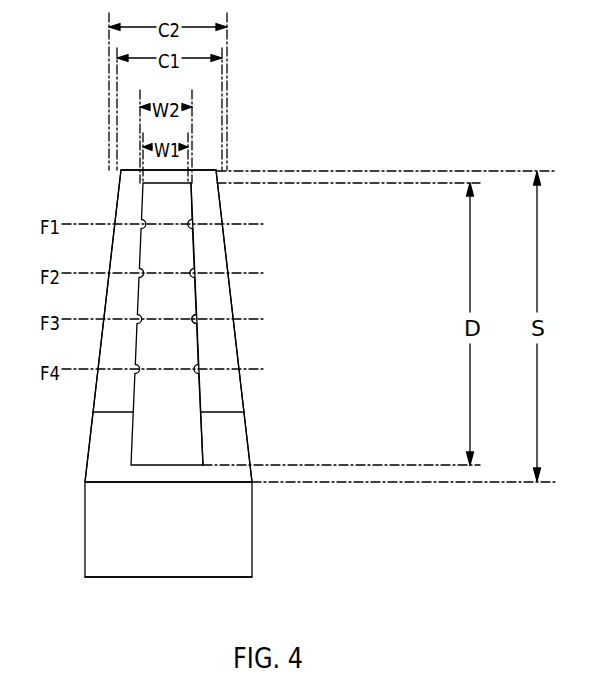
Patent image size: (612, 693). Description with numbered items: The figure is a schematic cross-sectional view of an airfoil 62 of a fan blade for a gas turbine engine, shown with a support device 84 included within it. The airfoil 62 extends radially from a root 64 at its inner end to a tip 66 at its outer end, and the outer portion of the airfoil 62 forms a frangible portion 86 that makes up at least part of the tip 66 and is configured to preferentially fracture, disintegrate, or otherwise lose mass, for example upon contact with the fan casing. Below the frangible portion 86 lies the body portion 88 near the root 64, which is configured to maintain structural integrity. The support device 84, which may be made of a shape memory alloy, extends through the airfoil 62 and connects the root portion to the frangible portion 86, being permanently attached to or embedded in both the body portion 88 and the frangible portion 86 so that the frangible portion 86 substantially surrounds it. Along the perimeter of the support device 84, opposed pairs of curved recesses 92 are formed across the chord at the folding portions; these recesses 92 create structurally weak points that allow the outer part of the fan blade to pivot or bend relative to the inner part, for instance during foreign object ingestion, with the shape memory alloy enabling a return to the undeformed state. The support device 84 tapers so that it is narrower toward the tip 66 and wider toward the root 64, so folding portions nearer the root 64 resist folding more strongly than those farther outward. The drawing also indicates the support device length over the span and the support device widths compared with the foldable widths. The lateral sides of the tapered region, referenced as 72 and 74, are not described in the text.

The airfoil 62 is at (279, 393).
The root 64 is at (183, 577).
The tip 66 is at (125, 168).
The first tapered side wall 72 is at (95, 395).
The second tapered side wall 74 is at (224, 238).
The support device 84 is at (177, 438).
The frangible portion 86 is at (228, 356).
The body portion 88 is at (118, 508).
The recess 92 is at (210, 327).